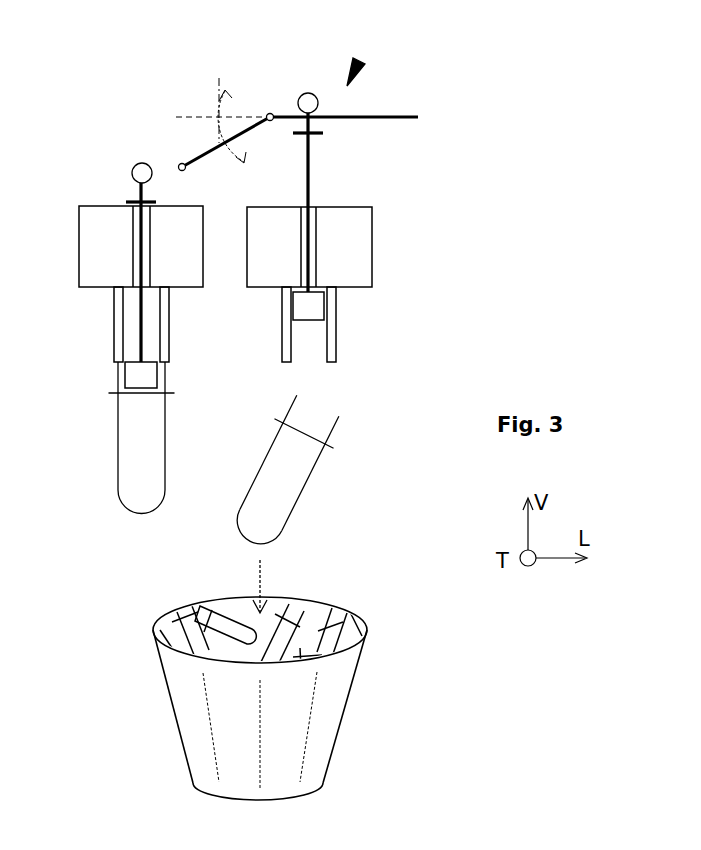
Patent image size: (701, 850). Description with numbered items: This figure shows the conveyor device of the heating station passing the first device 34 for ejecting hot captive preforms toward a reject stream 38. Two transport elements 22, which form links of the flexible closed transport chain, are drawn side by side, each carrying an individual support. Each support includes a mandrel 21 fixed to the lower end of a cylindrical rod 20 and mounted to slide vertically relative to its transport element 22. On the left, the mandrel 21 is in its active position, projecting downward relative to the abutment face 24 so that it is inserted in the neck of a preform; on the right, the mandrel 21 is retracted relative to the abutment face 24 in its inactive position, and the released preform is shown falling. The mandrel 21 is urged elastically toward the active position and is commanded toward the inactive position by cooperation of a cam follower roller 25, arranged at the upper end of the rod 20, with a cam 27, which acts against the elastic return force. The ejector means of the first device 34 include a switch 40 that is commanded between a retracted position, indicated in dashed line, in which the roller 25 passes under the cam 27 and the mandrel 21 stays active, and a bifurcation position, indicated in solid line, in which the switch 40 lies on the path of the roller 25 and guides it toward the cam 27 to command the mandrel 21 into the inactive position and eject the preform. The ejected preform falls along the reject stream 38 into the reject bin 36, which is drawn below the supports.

The cylindrical rod 20 is at (137, 305).
The mandrel 21 is at (137, 376).
The transport element 22 is at (107, 237).
The abutment face 24 is at (335, 364).
The cam follower roller 25 is at (139, 163).
The cam 27 is at (370, 117).
The first device for ejecting hot captive preforms 34 is at (358, 62).
The bin 36 is at (290, 708).
The reject stream 38 is at (255, 578).
The switch 40 is at (207, 152).